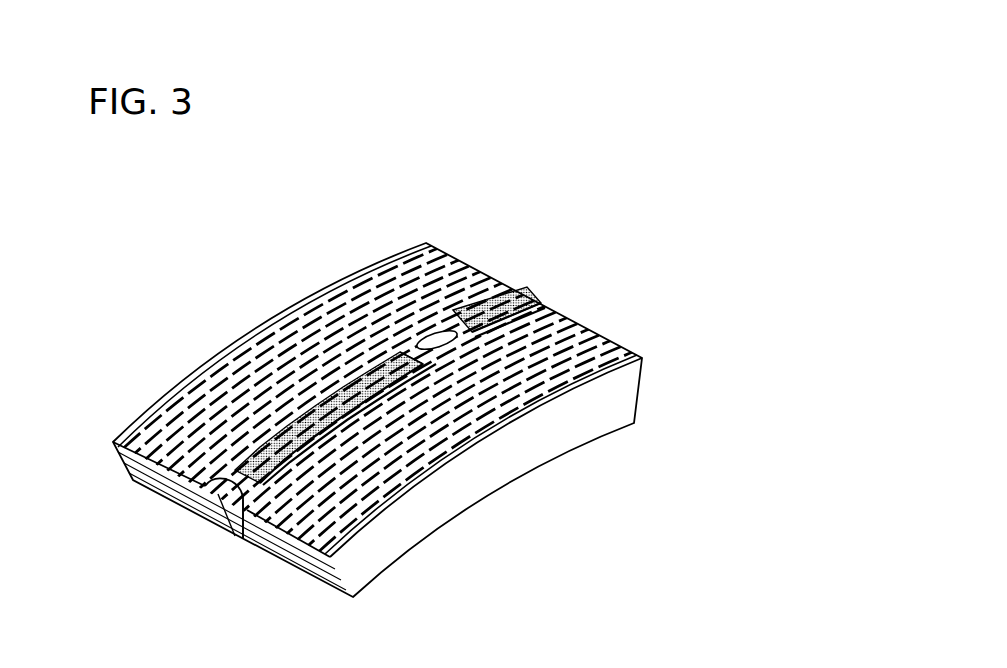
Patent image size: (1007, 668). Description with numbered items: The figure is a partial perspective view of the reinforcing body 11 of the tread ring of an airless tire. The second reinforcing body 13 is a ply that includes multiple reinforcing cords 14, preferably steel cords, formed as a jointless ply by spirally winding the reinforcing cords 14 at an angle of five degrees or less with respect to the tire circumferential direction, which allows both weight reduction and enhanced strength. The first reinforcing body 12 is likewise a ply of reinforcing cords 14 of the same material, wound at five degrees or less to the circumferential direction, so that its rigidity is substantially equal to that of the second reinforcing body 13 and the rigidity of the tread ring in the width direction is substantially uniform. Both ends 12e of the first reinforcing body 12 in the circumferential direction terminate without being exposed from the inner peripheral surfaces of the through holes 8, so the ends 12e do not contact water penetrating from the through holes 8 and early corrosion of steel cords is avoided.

The reinforcing body 11 is at (679, 171).
The first reinforcing body 12 is at (305, 414).
The second reinforcing body 13 is at (420, 280).
The reinforcing cords 14 is at (393, 268).
The through holes 8 is at (205, 492).
The ends of the first reinforcing body 12e is at (255, 510).